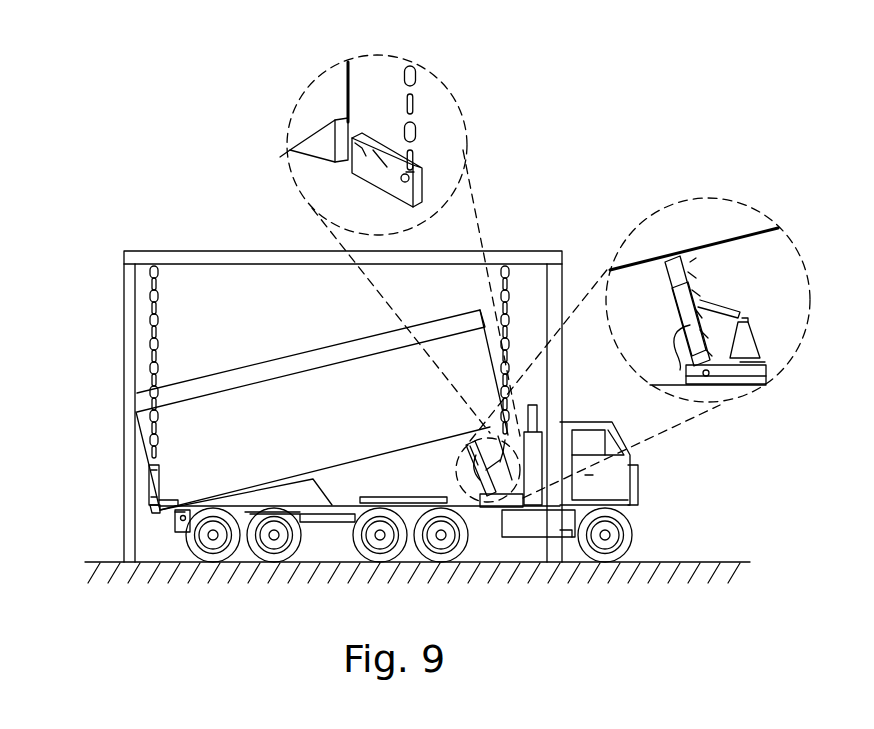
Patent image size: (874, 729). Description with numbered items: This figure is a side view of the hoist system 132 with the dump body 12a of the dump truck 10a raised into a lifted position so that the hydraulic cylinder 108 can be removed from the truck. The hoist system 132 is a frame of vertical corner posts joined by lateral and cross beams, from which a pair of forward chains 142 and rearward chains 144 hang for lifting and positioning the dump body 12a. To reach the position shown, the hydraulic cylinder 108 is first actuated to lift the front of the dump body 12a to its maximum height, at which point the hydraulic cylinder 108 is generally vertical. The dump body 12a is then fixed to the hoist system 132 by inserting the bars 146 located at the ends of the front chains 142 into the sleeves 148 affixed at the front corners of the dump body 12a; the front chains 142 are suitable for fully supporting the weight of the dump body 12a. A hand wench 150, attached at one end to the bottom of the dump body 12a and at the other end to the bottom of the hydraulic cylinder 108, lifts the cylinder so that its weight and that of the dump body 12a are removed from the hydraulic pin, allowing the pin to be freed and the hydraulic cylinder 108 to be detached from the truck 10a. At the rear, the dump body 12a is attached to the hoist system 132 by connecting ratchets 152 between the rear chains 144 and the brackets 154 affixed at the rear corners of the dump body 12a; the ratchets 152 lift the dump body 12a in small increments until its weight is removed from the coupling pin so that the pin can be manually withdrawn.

The dump truck 10a is at (240, 348).
The dump body 12a is at (300, 355).
The hydraulic cylinder 108 is at (650, 330).
The hoist system 132 is at (186, 228).
The front chains 142 is at (508, 322).
The rear chains 144 is at (153, 343).
The bars 146 is at (423, 188).
The sleeves 148 is at (352, 145).
The hand wench 150 is at (665, 317).
The ratchets 152 is at (147, 470).
The brackets 154 is at (150, 508).